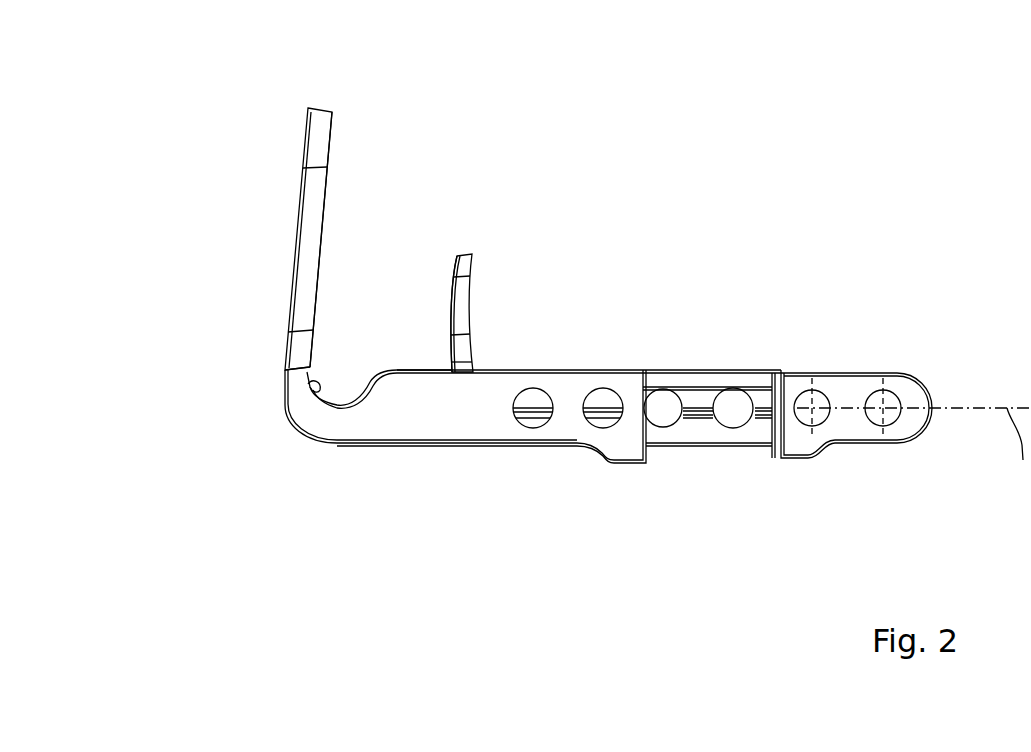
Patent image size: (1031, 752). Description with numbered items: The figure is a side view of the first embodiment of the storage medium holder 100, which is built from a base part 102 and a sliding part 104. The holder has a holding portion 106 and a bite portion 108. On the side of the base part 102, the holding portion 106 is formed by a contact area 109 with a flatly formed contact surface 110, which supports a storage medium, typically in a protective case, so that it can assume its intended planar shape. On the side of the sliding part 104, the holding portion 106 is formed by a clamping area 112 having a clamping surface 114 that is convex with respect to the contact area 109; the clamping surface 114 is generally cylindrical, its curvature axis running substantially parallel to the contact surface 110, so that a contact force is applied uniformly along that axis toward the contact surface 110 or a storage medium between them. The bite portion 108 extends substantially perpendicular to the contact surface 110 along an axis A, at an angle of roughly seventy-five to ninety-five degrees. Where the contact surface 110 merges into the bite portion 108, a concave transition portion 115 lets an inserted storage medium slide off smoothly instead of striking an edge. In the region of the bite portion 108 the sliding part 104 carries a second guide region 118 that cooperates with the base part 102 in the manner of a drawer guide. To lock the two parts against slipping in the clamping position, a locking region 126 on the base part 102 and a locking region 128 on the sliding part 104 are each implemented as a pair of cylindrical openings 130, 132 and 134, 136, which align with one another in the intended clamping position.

The storage medium holder 100 is at (598, 119).
The base part 102 is at (378, 455).
The sliding part 104 is at (853, 371).
The holding portion 106 is at (298, 108).
The bite portion 108 is at (890, 497).
The contact area 109 is at (336, 342).
The contact surface 110 is at (322, 261).
The clamping area 112 is at (462, 246).
The clamping surface 114 is at (450, 294).
The transition portion 115 is at (313, 385).
The second guide region 118 is at (770, 430).
The locking region 126 is at (625, 427).
The locking region 128 is at (762, 300).
The opening 130 is at (537, 388).
The opening 132 is at (605, 388).
The opening 134 is at (665, 389).
The opening 136 is at (735, 388).